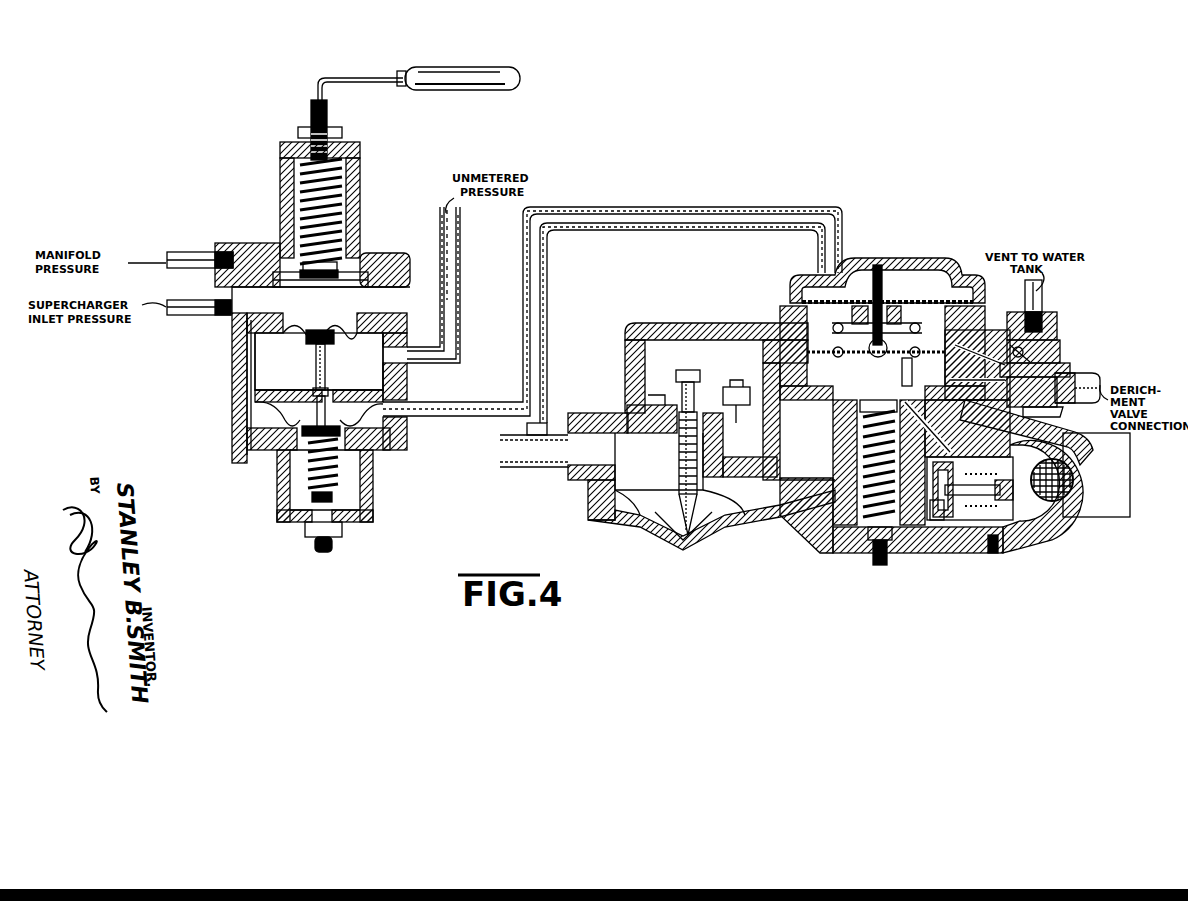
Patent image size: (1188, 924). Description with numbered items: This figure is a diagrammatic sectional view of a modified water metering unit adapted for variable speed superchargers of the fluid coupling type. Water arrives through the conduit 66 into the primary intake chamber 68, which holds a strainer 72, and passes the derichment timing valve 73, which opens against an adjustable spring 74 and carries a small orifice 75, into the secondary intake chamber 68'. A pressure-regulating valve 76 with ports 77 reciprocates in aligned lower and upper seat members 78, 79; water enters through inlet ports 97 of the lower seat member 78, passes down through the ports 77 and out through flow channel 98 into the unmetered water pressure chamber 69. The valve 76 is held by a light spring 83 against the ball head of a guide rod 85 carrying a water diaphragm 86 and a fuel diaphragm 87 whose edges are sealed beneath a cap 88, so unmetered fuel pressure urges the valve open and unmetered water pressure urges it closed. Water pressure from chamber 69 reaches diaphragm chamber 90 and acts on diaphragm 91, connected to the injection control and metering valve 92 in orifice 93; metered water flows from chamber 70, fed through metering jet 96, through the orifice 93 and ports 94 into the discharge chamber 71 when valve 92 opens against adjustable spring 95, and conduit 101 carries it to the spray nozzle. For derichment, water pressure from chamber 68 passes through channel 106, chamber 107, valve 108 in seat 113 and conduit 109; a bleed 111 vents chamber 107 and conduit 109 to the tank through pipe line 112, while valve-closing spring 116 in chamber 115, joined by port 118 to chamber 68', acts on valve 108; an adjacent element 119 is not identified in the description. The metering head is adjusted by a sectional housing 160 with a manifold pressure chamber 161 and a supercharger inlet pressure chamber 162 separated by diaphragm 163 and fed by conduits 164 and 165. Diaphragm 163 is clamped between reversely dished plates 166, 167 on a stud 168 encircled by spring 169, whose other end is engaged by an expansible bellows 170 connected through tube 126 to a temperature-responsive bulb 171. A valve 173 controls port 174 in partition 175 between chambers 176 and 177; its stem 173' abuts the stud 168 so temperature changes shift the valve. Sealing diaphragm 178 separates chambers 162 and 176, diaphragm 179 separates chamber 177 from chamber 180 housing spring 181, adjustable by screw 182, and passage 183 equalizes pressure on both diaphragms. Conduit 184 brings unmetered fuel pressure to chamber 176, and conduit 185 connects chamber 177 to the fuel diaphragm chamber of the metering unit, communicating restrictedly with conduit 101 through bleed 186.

The conduit 66 is at (1118, 525).
The primary intake chamber 68 is at (1043, 502).
The secondary intake chamber 68' is at (950, 497).
The unmetered water pressure chamber 69 is at (790, 503).
The chamber 70 is at (714, 344).
The outlet or discharge chamber 71 is at (592, 497).
The strainer 72 is at (1072, 525).
The derichment timing valve 73 is at (948, 530).
The adjustable spring 74 is at (1000, 542).
The orifice or jet 75 is at (960, 478).
The pressure-regulating valve 76 is at (862, 440).
The ports 77 is at (858, 420).
The lower seat member 78 is at (862, 457).
The upper seat member 79 is at (858, 352).
The light spring 83 is at (878, 550).
The guide rod 85 is at (905, 270).
The water diaphragm 86 is at (828, 345).
The fuel diaphragm 87 is at (960, 297).
The cap 88 is at (935, 277).
The diaphragm chamber 90 is at (665, 525).
The diaphragm 91 is at (625, 525).
The injection control and metering valve 92 is at (684, 378).
The orifice 93 is at (648, 395).
The ports 94 is at (640, 420).
The adjustable spring 95 is at (668, 470).
The metering jet 96 is at (736, 423).
The inlet ports 97 is at (908, 352).
The flow channel 98 is at (830, 520).
The conduit 101 is at (510, 460).
The channel 106 is at (1020, 428).
The chamber 107 is at (1062, 353).
The valve 108 is at (1042, 418).
The conduit 109 is at (1080, 386).
The bleed 111 is at (1085, 372).
The pipe line 112 is at (1043, 292).
The seat 113 is at (1048, 368).
The chamber 115 is at (960, 350).
The valve-closing spring 116 is at (925, 405).
The port 118 is at (955, 336).
The valve 119 is at (1030, 342).
The tube or conduit 126 is at (361, 76).
The sectional housing 160 is at (229, 470).
The manifold pressure chamber 161 is at (283, 250).
The supercharger inlet pressure chamber 162 is at (243, 330).
The diaphragm 163 is at (400, 283).
The conduit 164 is at (192, 257).
The conduit 165 is at (185, 300).
The dished plate 166 is at (352, 270).
The dished plate 167 is at (395, 298).
The stud 168 is at (393, 320).
The spring 169 is at (335, 232).
The expansible bellows or capsule 170 is at (342, 185).
The temperature-responsive bulb 171 is at (463, 84).
The valve 173 is at (345, 413).
The valve stem 173' is at (347, 367).
The port 174 is at (315, 389).
The partition 175 is at (260, 406).
The chamber 176 is at (262, 357).
The chamber 177 is at (260, 430).
The sealing diaphragm 178 is at (293, 325).
The diaphragm 179 is at (373, 457).
The chamber 180 is at (355, 485).
The spring 181 is at (314, 470).
The screw 182 is at (338, 544).
The passage 183 is at (247, 386).
The conduit 184 is at (457, 237).
The conduit 185 is at (463, 402).
The bleed 186 is at (546, 414).